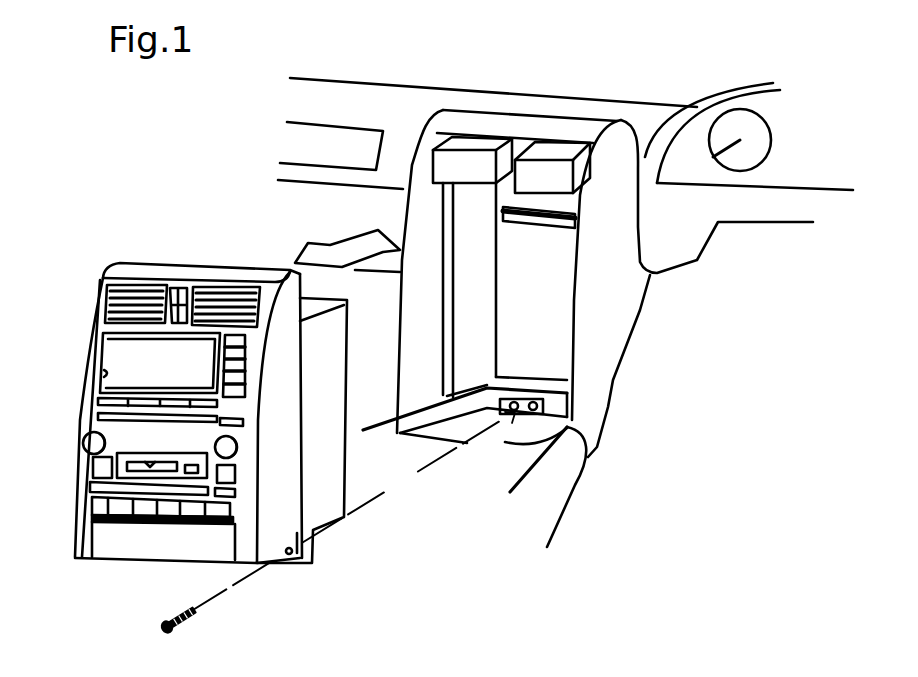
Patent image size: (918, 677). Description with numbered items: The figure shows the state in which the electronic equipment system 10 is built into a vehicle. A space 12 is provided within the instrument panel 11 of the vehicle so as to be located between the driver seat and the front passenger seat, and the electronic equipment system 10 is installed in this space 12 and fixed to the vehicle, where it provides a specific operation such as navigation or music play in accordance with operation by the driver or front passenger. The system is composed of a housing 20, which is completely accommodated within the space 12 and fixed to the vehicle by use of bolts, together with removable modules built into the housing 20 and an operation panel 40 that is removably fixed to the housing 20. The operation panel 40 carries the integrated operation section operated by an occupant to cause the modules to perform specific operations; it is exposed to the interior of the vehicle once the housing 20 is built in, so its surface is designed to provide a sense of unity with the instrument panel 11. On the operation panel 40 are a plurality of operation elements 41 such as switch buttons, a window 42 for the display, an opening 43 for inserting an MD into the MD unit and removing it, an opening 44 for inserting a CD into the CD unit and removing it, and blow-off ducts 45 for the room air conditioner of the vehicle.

The electronic equipment system 10 is at (191, 193).
The instrument panel 11 is at (530, 87).
The space 12 is at (546, 305).
The housing 20 is at (348, 338).
The operation panel 40 is at (90, 326).
The operation elements 41 is at (245, 343).
The window 42 is at (103, 375).
The opening 43 is at (160, 463).
The opening 44 is at (87, 491).
The blow-off ducts 45 is at (147, 288).